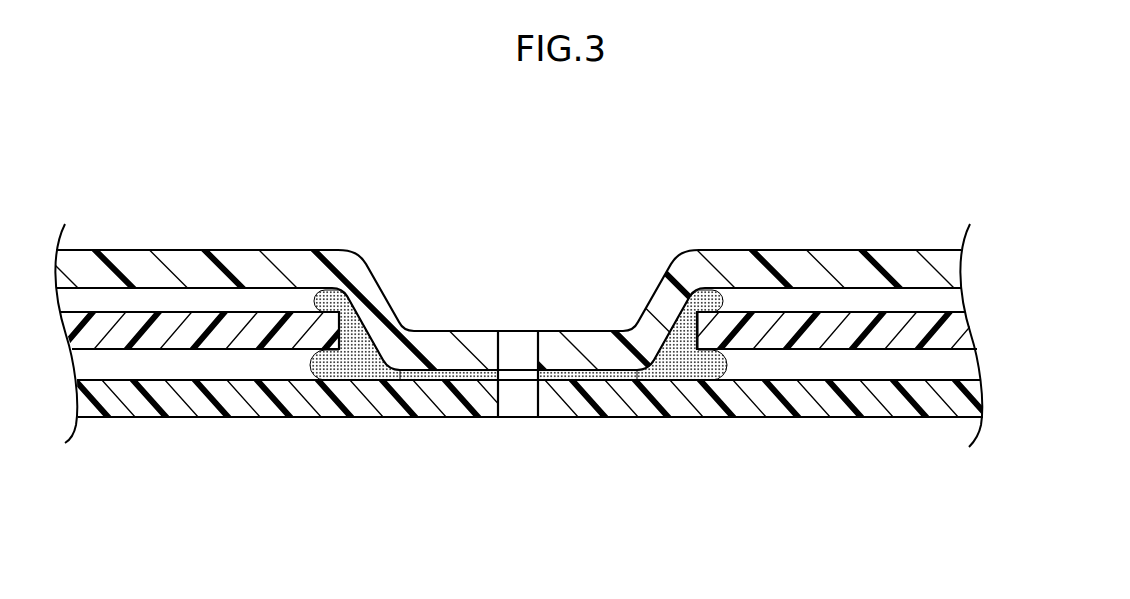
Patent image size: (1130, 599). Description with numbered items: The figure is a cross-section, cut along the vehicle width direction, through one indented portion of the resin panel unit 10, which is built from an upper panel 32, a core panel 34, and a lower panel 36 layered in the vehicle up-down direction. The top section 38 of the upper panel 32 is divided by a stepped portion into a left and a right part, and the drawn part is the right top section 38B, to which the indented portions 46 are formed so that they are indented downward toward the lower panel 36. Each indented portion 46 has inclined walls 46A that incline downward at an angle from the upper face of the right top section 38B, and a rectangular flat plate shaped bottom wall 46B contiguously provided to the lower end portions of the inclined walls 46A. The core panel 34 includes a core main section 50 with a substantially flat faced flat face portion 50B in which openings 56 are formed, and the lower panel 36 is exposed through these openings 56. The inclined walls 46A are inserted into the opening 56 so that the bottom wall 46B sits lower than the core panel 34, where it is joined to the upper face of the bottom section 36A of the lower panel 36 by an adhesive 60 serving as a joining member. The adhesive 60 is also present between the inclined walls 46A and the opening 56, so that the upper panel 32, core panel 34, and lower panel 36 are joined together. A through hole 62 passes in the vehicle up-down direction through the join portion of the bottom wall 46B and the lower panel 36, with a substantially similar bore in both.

The resin panel unit 10 is at (183, 147).
The upper panel 32 is at (575, 313).
The core panel 34 is at (975, 331).
The lower panel 36 is at (573, 429).
The bottom section 36A is at (855, 383).
The top section 38 is at (508, 214).
The right top section 38B is at (820, 250).
The indented portion 46 is at (666, 262).
The inclined wall 46A is at (383, 292).
The bottom wall 46B is at (472, 331).
The core main section 50 is at (586, 284).
The flat face portion 50B is at (920, 312).
The opening 56 is at (358, 305).
The adhesive 60 is at (432, 374).
The through hole 62 is at (537, 348).